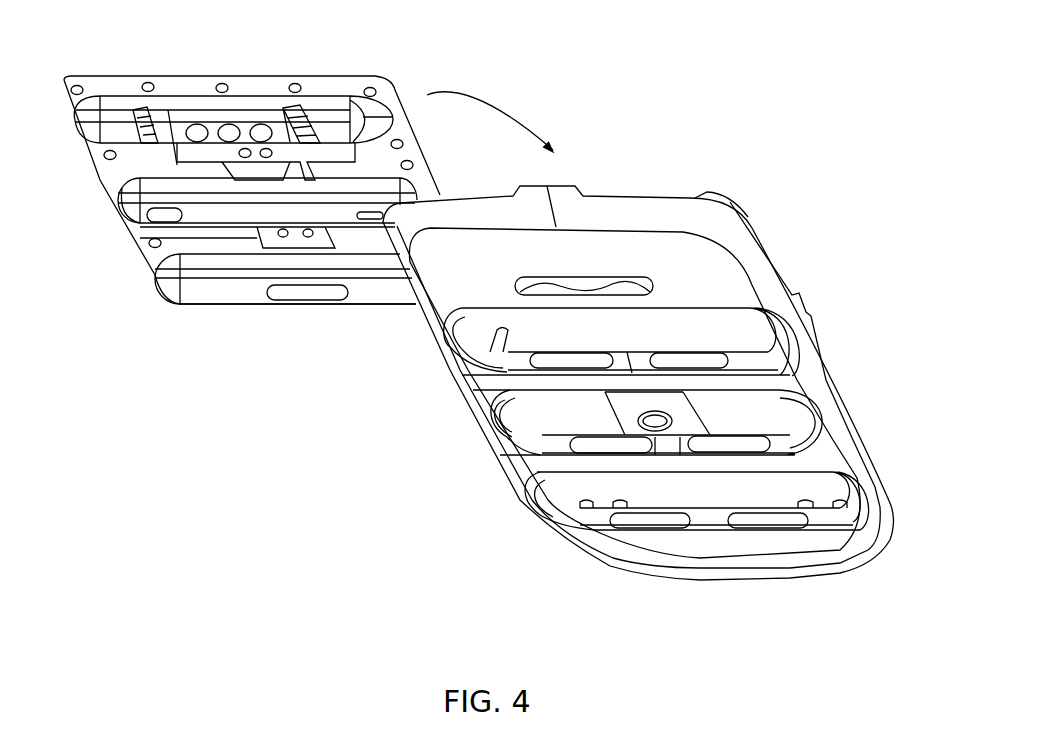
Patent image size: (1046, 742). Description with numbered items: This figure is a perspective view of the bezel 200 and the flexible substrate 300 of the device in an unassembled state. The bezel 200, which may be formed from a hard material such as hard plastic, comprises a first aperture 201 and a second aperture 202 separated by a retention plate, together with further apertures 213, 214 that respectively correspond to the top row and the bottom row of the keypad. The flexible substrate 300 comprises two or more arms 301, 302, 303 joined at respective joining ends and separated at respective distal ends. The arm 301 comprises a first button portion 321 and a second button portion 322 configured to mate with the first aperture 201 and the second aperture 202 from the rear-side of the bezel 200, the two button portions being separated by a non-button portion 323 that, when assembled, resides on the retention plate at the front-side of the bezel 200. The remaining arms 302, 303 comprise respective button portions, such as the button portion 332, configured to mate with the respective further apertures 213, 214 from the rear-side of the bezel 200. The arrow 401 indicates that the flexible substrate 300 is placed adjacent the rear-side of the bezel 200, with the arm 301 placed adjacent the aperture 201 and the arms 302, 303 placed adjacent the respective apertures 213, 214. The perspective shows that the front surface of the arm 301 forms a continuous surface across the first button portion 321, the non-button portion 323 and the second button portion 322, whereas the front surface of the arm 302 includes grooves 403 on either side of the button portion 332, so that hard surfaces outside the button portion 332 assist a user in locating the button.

The flexible substrate 300 is at (78, 86).
The grooves 403 is at (168, 110).
The button portion 332 is at (242, 135).
The arrow 401 is at (500, 97).
The arm 302 is at (378, 105).
The second button portion 322 is at (400, 205).
The bezel 200 is at (743, 208).
The further aperture 213 is at (765, 312).
The first button portion 321 is at (127, 204).
The arm 301 is at (133, 222).
The arm 303 is at (203, 293).
The non-button portion 323 is at (290, 215).
The second aperture 202 is at (504, 411).
The first aperture 201 is at (812, 424).
The further aperture 214 is at (856, 492).